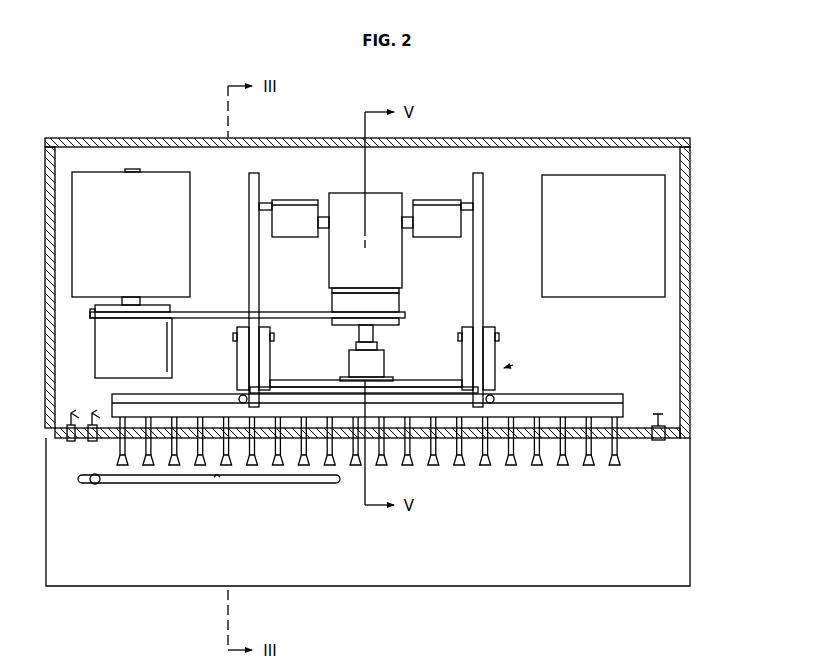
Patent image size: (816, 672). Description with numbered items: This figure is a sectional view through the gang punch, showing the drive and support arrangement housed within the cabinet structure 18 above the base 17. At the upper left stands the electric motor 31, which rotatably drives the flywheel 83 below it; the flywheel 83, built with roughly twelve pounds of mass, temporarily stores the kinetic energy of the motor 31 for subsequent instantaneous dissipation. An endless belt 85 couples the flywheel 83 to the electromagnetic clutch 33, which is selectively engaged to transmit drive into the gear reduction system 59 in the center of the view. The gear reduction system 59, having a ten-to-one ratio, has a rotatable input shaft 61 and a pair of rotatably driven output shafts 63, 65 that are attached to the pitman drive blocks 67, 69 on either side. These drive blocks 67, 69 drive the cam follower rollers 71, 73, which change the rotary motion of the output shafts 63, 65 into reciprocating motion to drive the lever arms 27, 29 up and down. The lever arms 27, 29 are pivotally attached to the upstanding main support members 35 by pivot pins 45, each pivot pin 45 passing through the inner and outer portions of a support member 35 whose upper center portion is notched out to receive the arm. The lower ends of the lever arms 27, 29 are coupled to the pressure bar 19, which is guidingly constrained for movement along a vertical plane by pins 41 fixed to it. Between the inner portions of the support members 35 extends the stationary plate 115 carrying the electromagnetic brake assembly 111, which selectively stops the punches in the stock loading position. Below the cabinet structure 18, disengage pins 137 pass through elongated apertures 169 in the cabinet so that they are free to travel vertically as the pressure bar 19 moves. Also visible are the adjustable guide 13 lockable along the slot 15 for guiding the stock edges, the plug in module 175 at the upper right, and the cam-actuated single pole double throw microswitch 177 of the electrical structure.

The adjustable guide 13 is at (95, 484).
The slot 15 is at (213, 483).
The base 17 is at (678, 535).
The cabinet structure 18 is at (687, 277).
The pressure bar 19 is at (592, 400).
The lever arm 27 is at (253, 275).
The lever arm 29 is at (480, 287).
The motor 31 is at (131, 240).
The electromagnetic clutch 33 is at (403, 305).
The main support members 35 is at (245, 362).
The pins 41 is at (240, 397).
The pivot pin 45 is at (274, 340).
The gear reduction system 59 is at (386, 205).
The input shaft 61 is at (372, 334).
The output shaft 63 is at (325, 230).
The output shaft 65 is at (404, 230).
The pitman drive block 67 is at (295, 218).
The pitman drive block 69 is at (437, 218).
The cam follower roller 71 is at (262, 207).
The cam follower roller 73 is at (472, 207).
The flywheel 83 is at (133, 348).
The endless belt 85 is at (208, 312).
The electromagnetic brake assembly 111 is at (387, 370).
The stationary plate 115 is at (308, 385).
The disengage pins 137 is at (537, 466).
The elongated aperture 169 is at (482, 437).
The plug in module 175 is at (588, 183).
The cam-actuated single pole double throw microswitch 177 is at (513, 365).